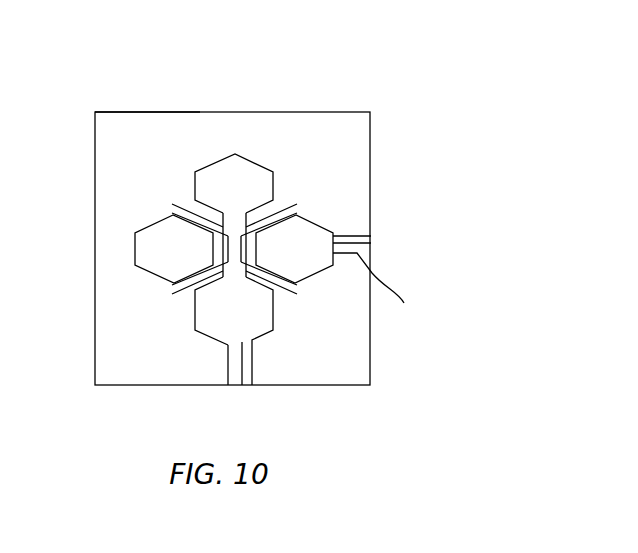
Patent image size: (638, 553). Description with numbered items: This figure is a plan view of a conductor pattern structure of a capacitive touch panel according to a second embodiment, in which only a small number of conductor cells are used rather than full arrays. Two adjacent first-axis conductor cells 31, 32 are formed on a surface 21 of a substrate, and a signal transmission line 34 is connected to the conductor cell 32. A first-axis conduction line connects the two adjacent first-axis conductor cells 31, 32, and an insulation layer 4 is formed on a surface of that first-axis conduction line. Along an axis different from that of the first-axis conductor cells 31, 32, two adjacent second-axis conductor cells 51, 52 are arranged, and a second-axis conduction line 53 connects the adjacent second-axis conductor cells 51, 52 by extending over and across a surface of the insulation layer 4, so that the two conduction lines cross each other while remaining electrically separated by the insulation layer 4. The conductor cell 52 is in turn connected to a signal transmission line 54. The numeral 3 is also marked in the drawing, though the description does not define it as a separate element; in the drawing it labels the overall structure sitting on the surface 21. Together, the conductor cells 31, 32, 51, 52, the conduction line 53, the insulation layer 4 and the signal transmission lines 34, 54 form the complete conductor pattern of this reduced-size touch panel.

The substrate 3 is at (196, 112).
The surface 21 is at (142, 117).
The second-axis conductor cell 51 is at (259, 167).
The second-axis conductor cell 52 is at (258, 372).
The first-axis conductor cell 31 is at (134, 246).
The first-axis conductor cell 32 is at (372, 240).
The second-axis conduction line 53 is at (172, 204).
The signal transmission line 54 is at (228, 377).
The insulation layer 4 is at (271, 215).
The signal transmission line 34 is at (329, 289).